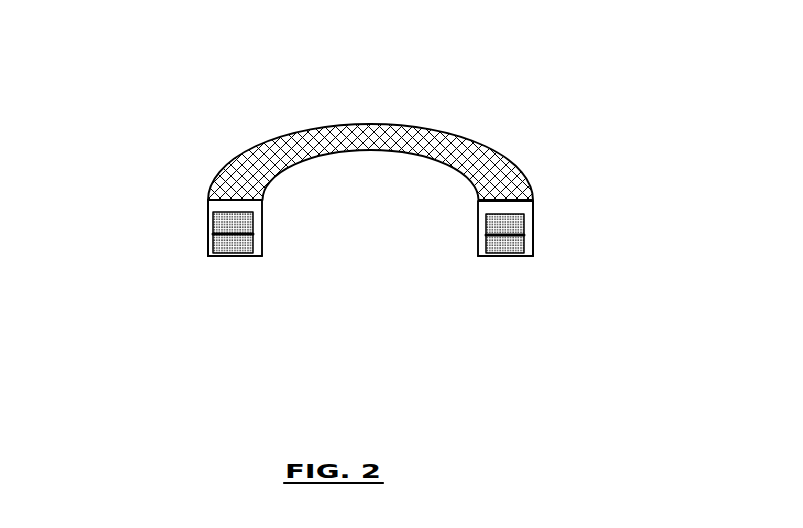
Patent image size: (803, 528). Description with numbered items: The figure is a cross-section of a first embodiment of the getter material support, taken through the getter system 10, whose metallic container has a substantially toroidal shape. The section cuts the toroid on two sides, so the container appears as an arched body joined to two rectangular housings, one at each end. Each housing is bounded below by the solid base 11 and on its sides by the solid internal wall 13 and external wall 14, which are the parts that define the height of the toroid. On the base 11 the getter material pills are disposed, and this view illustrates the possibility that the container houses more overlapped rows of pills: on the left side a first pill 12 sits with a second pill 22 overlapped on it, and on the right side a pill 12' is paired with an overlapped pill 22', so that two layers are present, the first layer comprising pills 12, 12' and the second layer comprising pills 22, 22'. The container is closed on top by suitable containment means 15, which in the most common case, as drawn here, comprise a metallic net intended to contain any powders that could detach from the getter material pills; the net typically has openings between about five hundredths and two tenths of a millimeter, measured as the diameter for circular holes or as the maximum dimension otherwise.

The getter system 10 is at (583, 153).
The base 11 is at (252, 257).
The getter material pill 12 is at (150, 249).
The getter material pill 12' is at (608, 185).
The internal wall 13 is at (262, 230).
The external wall 14 is at (208, 219).
The containment means 15 is at (360, 135).
The getter material pill 22 is at (195, 290).
The getter material pill 22' is at (478, 318).